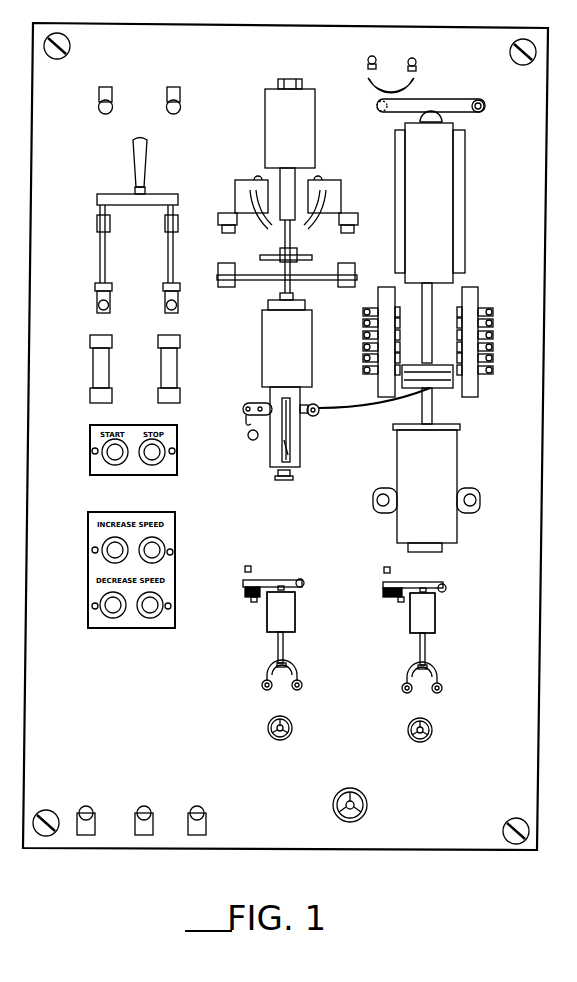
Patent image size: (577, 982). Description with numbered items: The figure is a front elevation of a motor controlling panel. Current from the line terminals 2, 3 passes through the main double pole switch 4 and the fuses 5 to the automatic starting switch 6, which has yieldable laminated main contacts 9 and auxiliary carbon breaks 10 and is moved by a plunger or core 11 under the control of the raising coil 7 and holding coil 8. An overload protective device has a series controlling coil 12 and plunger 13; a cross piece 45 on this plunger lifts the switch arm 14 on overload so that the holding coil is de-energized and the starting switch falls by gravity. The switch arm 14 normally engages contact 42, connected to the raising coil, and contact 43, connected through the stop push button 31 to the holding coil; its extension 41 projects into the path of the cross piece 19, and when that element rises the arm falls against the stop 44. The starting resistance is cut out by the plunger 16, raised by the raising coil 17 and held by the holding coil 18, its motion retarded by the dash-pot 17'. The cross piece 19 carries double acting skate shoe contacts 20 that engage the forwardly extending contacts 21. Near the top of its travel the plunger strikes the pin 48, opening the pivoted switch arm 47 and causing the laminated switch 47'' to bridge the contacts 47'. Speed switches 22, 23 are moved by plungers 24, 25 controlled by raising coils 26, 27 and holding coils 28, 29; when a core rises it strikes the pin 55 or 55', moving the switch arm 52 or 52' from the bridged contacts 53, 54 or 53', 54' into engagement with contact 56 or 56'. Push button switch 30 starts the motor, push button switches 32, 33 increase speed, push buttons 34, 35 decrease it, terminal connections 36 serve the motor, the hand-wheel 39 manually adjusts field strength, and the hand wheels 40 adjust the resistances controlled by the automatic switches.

The line terminal 2 is at (106, 88).
The line terminal 3 is at (175, 88).
The main double pole switch 4 is at (137, 226).
The fuses 5 is at (158, 366).
The automatic starting switch 6 is at (292, 246).
The raising coil 7 is at (272, 146).
The holding coil 8 is at (275, 101).
The yieldable laminated main contacts 9 is at (262, 222).
The auxiliary carbon breaks 10 is at (345, 267).
The plunger or core 11 is at (290, 177).
The series controlling coil 12 is at (287, 340).
The plunger 13 is at (290, 433).
The switch arm 14 is at (268, 402).
The plunger 16 is at (432, 288).
The raising coil 17 is at (456, 203).
The dash-pot 17' is at (426, 488).
The holding coil 18 is at (465, 155).
The cross piece 19 is at (447, 390).
The yieldable contacts 20 is at (380, 385).
The forwardly extending contacts 21 is at (400, 348).
The speed controlling switch 22 is at (293, 671).
The speed controlling switch 23 is at (433, 674).
The plunger 24 is at (278, 643).
The plunger 25 is at (420, 645).
The raising coil 26 is at (290, 625).
The raising coil 27 is at (437, 628).
The holding coil 28 is at (288, 600).
The holding coil 29 is at (437, 602).
The push button switch 30 is at (113, 455).
The push button switch 31 is at (154, 455).
The push button switch 32 is at (111, 554).
The push button switch 33 is at (157, 552).
The push button 34 is at (108, 612).
The push button 35 is at (145, 613).
The terminal connections 36 is at (190, 817).
The hand-wheel 39 is at (350, 791).
The hand wheels 40 is at (349, 741).
The extension 41 is at (367, 413).
The contact 42 is at (262, 420).
The contact 43 is at (243, 413).
The stop 44 is at (249, 437).
The cross piece 45 is at (288, 457).
The pivoted switch arm 47 is at (437, 87).
The contacts 47' is at (392, 50).
The laminated switch 47'' is at (375, 91).
The pin 48 is at (448, 118).
The switch arm 52 is at (450, 571).
The switch arm 52' is at (297, 565).
The contact 53 is at (385, 616).
The contact 53' is at (229, 616).
The contact 54 is at (374, 604).
The contact 54' is at (229, 598).
The pin 55 is at (476, 577).
The pin 55' is at (319, 571).
The contact 56 is at (369, 568).
The contact 56' is at (265, 547).